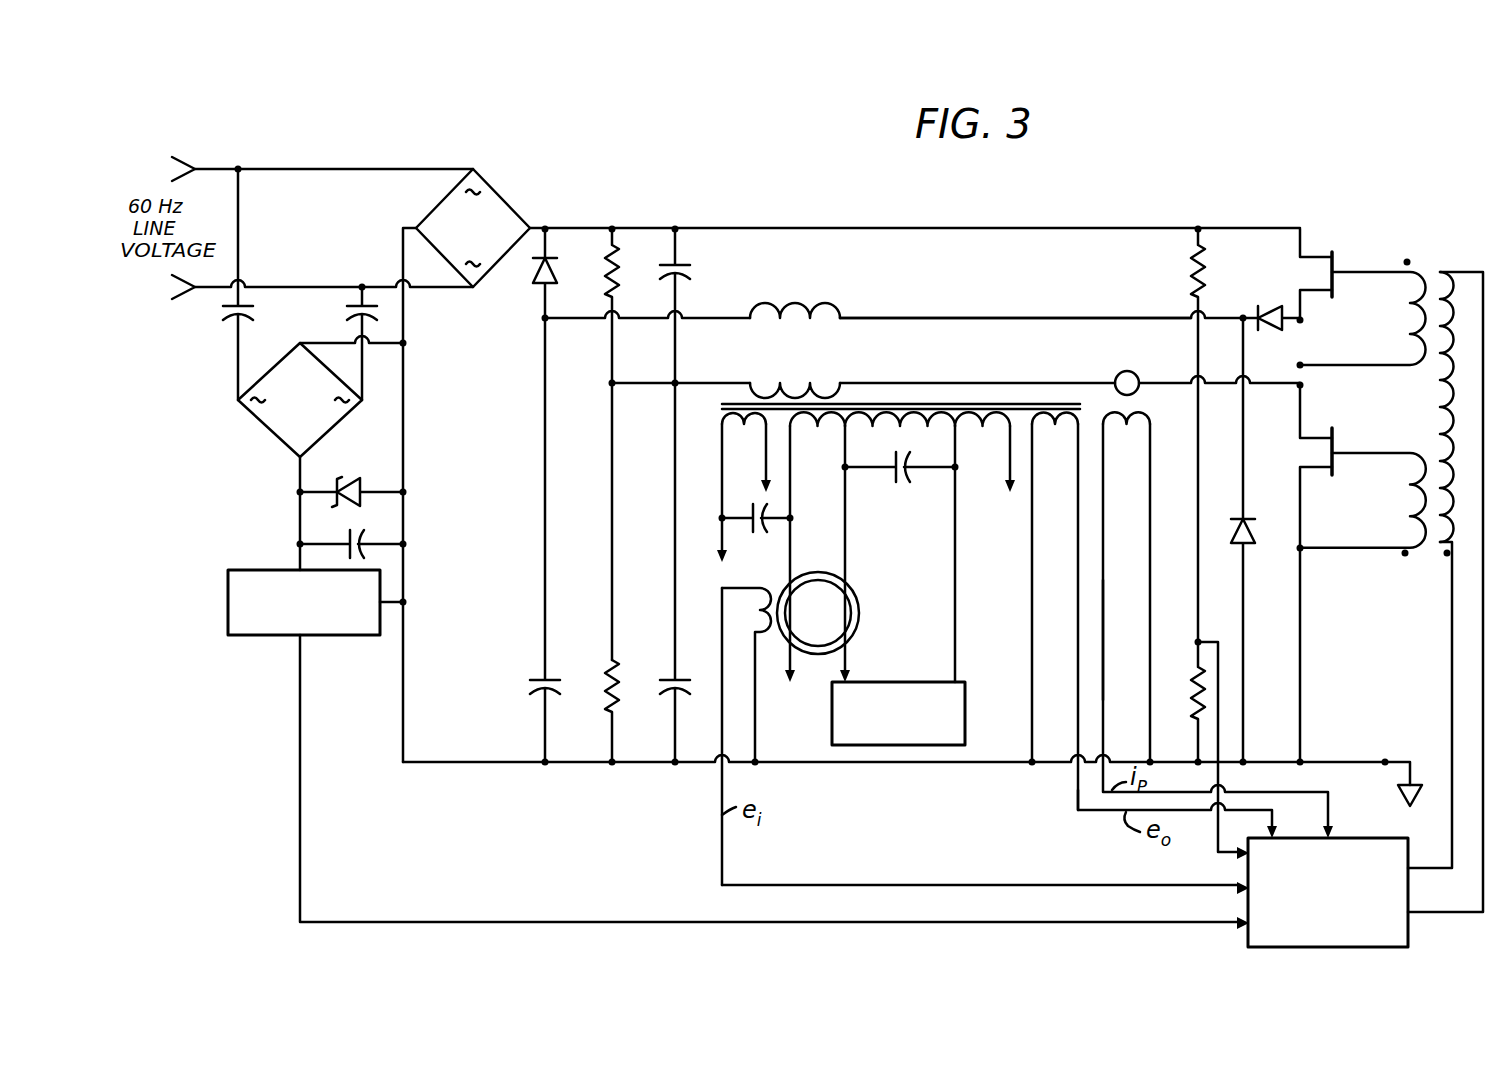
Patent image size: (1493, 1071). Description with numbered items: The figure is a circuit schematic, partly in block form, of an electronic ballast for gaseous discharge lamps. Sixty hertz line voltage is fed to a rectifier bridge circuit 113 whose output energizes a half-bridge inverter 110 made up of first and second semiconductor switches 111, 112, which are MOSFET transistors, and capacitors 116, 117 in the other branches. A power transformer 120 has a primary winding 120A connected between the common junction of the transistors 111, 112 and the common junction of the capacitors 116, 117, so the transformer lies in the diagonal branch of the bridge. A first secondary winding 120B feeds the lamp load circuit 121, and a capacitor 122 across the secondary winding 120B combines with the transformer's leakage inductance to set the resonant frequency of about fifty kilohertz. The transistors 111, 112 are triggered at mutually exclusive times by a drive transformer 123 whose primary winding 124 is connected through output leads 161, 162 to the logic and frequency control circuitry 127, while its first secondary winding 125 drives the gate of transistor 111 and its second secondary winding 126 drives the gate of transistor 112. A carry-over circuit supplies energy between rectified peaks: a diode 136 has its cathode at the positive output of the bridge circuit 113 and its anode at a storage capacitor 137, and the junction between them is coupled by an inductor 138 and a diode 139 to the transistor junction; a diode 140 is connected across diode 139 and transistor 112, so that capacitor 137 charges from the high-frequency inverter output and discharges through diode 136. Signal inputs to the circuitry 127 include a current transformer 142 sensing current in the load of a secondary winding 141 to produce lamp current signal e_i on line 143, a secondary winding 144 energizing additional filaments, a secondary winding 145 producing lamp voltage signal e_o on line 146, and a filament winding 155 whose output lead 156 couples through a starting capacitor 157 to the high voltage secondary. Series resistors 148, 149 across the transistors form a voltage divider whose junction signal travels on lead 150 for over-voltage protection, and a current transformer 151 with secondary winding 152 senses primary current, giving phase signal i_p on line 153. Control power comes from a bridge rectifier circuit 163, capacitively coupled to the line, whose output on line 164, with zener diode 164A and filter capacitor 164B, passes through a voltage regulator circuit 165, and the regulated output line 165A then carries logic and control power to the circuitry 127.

The inverter 110 is at (968, 292).
The first semiconductor switch 111 is at (1314, 246).
The second semiconductor switch 112 is at (1312, 426).
The rectifier bridge circuit 113 is at (502, 194).
The capacitor 116 is at (681, 263).
The capacitor 117 is at (670, 679).
The power transformer 120 is at (898, 373).
The primary winding 120A is at (802, 383).
The first secondary winding 120B is at (897, 428).
The lamp load circuit 121 is at (965, 710).
The capacitor 122 is at (884, 473).
The drive transformer 123 is at (1429, 387).
The primary winding 124 is at (1440, 396).
The first secondary winding 125 is at (1408, 314).
The second secondary winding 126 is at (1393, 496).
The logic and frequency control circuitry 127 is at (1248, 876).
The diode 136 is at (588, 285).
The storage capacitor 137 is at (540, 678).
The inductor 138 is at (798, 300).
The diode 139 is at (1278, 283).
The diode 140 is at (1262, 535).
The secondary winding 141 is at (800, 432).
The current transformer 142 is at (858, 597).
The line 143 is at (779, 886).
The secondary winding 144 is at (965, 432).
The secondary winding 145 is at (1043, 440).
The line 146 is at (1096, 812).
The first resistor 148 is at (1192, 272).
The second resistor 149 is at (1192, 704).
The lead 150 is at (1227, 651).
The current transformer 151 is at (1112, 372).
The secondary winding 152 is at (1118, 440).
The line 153 is at (1125, 572).
The secondary filament winding 155 is at (733, 430).
The output lead 156 is at (722, 460).
The starting capacitor 157 is at (740, 530).
The output lead 161 is at (1414, 874).
The output lead 162 is at (1414, 916).
The bridge rectifier circuit 163 is at (268, 420).
The line 164 is at (348, 494).
The zener diode 164A is at (345, 477).
The filter capacitor 164B is at (364, 532).
The voltage regulator circuit 165 is at (228, 608).
The regulated supply line 165A is at (449, 921).